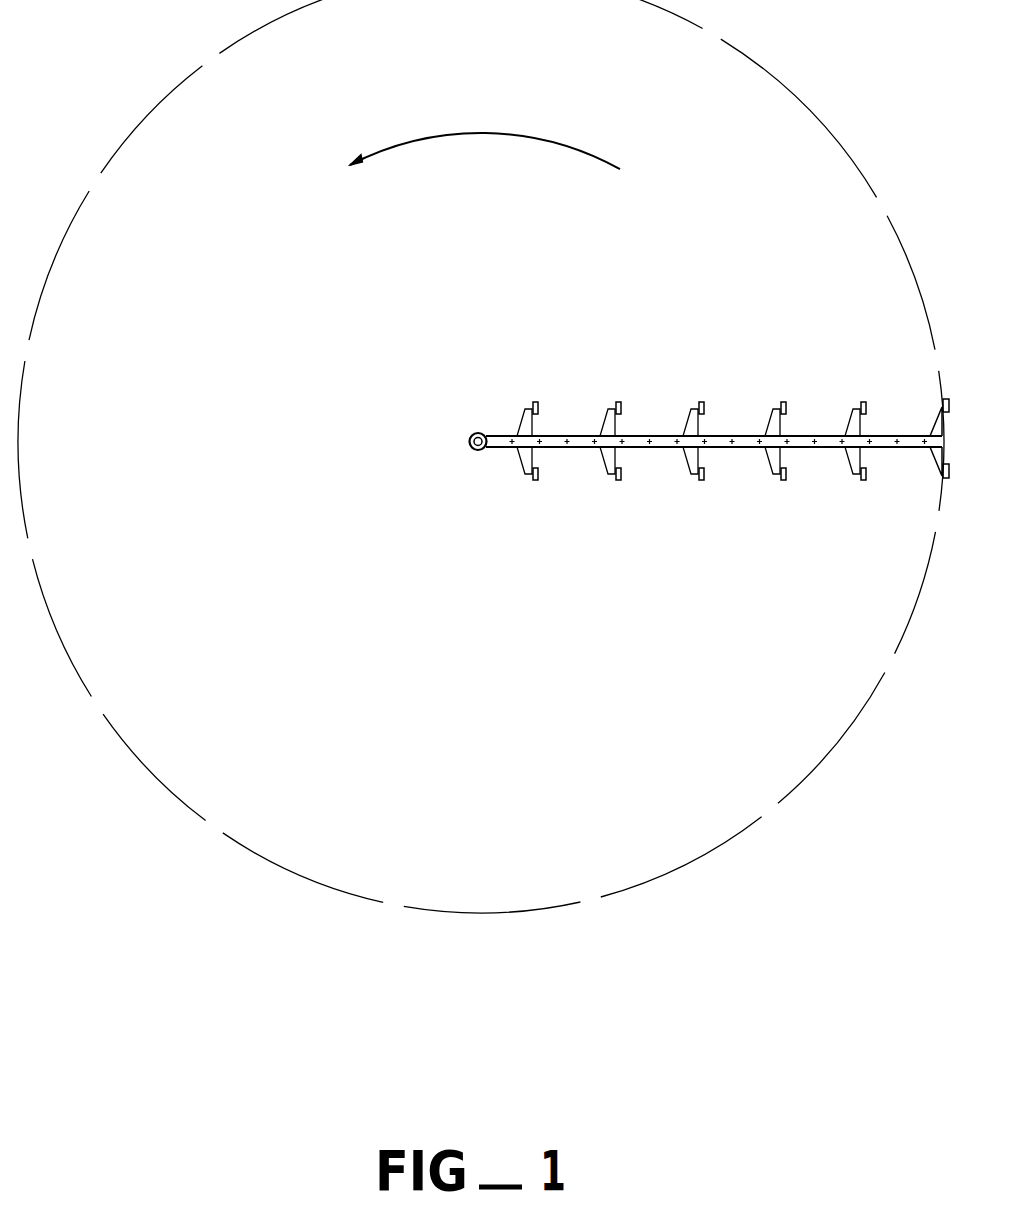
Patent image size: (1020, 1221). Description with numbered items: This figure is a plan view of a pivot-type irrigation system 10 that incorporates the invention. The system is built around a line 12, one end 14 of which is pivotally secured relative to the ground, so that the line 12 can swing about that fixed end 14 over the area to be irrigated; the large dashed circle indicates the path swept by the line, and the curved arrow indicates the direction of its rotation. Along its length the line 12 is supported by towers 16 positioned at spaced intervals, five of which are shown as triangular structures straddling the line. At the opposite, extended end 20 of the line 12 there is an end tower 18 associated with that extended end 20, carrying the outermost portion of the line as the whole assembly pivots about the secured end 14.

The irrigation system 10 is at (630, 540).
The line 12 is at (744, 448).
The end 14 is at (468, 432).
The towers 16 is at (612, 397).
The end tower 18 is at (935, 478).
The extended end 20 is at (941, 406).